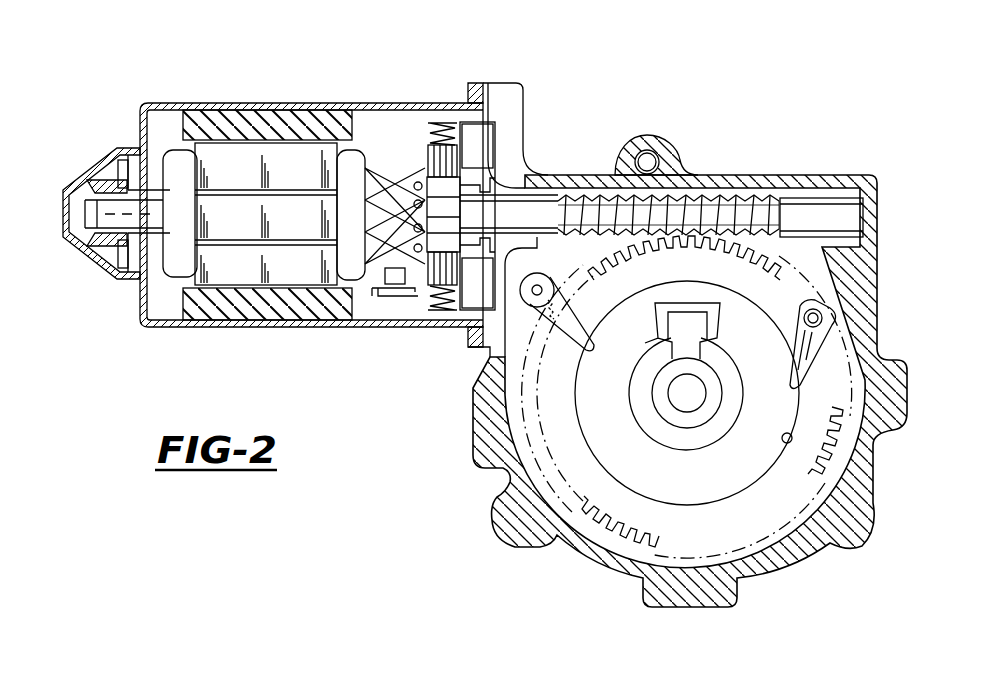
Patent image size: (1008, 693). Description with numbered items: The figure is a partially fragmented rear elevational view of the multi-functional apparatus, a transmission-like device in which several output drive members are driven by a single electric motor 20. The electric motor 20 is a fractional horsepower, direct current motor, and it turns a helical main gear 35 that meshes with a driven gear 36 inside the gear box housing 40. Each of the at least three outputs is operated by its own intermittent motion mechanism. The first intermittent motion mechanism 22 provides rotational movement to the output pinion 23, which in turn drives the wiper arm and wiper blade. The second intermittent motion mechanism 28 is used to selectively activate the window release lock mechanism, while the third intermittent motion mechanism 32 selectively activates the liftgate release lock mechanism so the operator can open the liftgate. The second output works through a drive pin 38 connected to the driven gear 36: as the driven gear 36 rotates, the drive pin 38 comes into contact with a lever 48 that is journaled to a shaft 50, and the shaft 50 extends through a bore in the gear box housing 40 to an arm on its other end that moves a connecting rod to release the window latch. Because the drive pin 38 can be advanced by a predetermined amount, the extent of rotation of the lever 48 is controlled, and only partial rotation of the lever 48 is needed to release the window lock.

The electric motor 20 is at (254, 122).
The first intermittent motion mechanism 22 is at (663, 403).
The output pinion 23 is at (670, 392).
The second intermittent motion mechanism 28 is at (531, 308).
The third intermittent motion mechanism 32 is at (815, 302).
The helical main gear 35 is at (722, 207).
The driven gear 36 is at (590, 493).
The drive pin 38 is at (787, 444).
The gear box housing 40 is at (672, 157).
The lever 48 is at (592, 260).
The shaft 50 is at (540, 286).